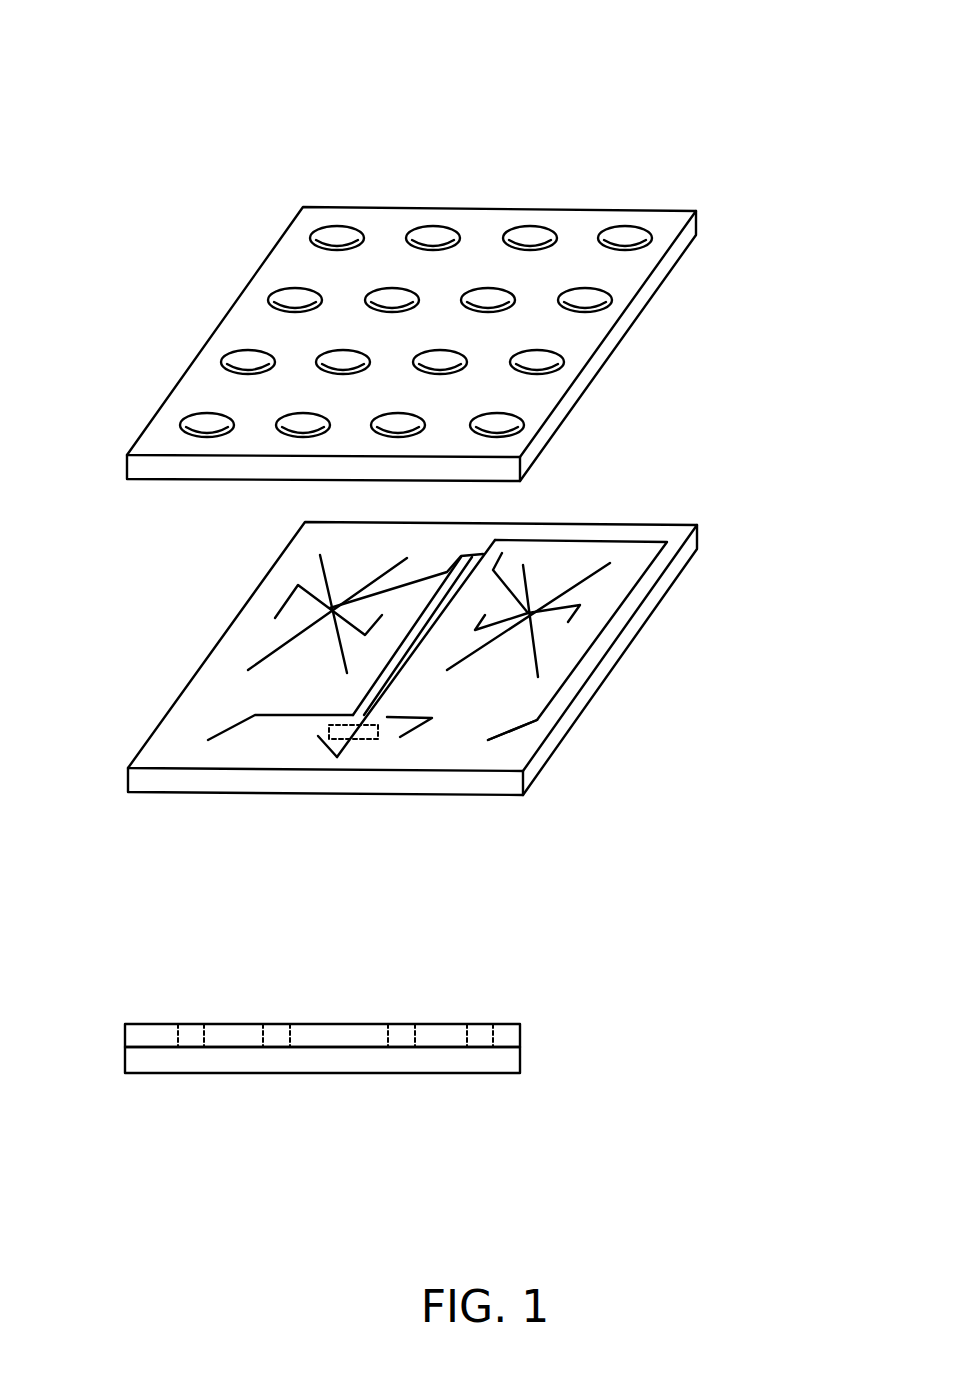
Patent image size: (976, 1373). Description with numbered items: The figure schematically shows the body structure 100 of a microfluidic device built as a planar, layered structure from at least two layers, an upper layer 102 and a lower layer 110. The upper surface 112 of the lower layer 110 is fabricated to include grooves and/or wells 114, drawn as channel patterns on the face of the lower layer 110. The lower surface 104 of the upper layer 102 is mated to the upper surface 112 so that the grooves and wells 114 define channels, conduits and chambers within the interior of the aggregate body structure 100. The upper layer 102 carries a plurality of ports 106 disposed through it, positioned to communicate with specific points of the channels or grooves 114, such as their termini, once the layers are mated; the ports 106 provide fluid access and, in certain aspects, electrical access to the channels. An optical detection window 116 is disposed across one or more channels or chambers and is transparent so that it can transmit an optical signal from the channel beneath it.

The body structure 100 is at (96, 116).
The upper layer 102 is at (714, 211).
The lower surface 104 is at (653, 302).
The ports 106 is at (343, 234).
The lower layer 110 is at (714, 525).
The upper surface 112 is at (307, 541).
The grooves and/or wells 114 is at (465, 748).
The optical detection window 116 is at (338, 729).